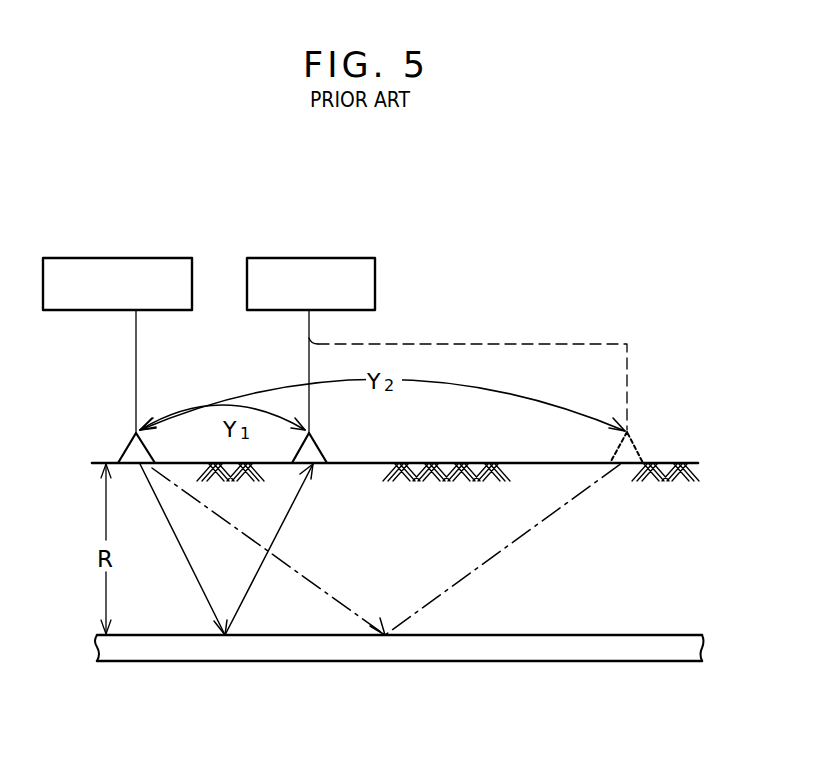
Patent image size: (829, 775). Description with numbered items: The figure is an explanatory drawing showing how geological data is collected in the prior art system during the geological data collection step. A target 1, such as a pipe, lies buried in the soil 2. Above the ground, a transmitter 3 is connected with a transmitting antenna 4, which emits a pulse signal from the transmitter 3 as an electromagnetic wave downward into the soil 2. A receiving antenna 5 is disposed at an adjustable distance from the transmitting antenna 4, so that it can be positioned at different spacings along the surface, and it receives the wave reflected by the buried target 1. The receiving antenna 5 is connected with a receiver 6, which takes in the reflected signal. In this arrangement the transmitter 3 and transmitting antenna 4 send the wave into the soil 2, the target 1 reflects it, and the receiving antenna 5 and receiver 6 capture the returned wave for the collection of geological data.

The target 1 is at (615, 652).
The soil 2 is at (676, 463).
The transmitter 3 is at (163, 258).
The transmitting antenna 4 is at (128, 446).
The receiving antenna 5 is at (323, 446).
The receiver 6 is at (318, 258).